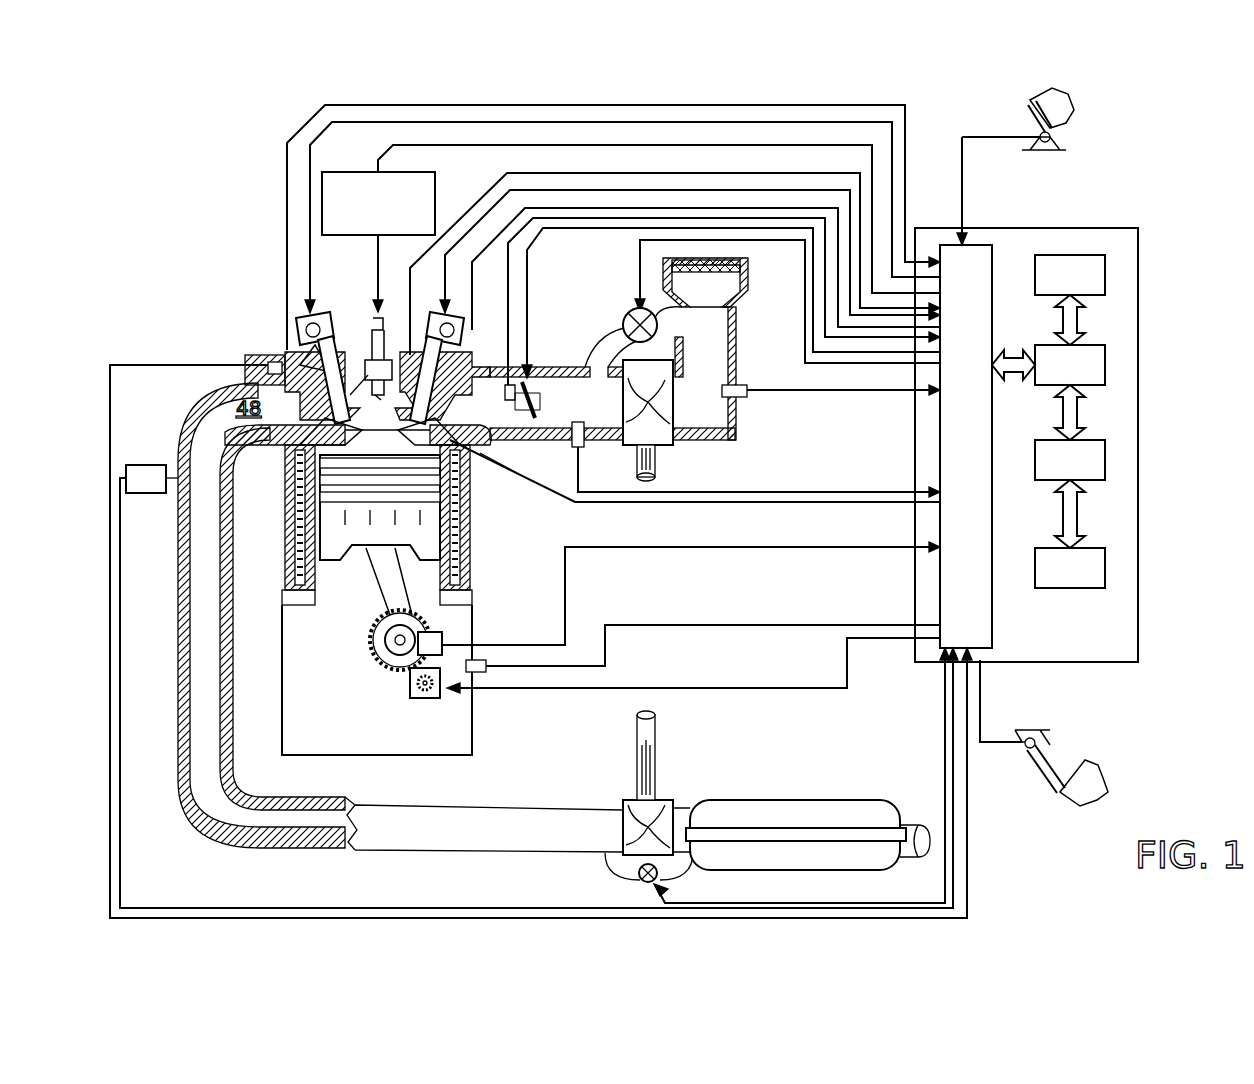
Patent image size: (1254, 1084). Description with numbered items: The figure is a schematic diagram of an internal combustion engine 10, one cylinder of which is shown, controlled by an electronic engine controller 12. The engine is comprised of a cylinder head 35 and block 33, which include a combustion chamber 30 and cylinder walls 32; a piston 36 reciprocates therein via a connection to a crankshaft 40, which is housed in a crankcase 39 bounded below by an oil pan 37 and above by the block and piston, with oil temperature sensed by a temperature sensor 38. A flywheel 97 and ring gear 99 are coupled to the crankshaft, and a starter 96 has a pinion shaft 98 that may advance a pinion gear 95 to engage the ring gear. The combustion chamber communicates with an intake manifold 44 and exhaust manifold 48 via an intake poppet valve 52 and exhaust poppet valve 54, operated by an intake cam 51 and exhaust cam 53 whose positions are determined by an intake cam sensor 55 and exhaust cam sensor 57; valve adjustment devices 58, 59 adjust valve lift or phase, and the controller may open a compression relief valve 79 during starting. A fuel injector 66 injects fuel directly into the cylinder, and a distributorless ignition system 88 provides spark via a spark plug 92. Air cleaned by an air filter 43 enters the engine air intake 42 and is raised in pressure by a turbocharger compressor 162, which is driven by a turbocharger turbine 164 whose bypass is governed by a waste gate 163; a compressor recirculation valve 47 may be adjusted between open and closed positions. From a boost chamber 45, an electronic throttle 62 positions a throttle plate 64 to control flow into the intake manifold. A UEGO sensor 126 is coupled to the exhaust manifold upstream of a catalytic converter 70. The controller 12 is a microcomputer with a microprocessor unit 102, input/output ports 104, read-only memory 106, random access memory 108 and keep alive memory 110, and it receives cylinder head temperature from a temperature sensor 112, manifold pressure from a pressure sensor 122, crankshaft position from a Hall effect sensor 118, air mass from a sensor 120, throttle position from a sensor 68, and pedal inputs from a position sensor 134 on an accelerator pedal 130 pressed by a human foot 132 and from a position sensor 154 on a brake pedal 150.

The internal combustion engine 10 is at (212, 298).
The electronic engine controller 12 is at (1132, 228).
The combustion chamber 30 is at (375, 450).
The cylinder walls 32 is at (318, 595).
The block 33 is at (278, 490).
The cylinder head 35 is at (272, 348).
The piston 36 is at (362, 545).
The oil pan 37 is at (472, 737).
The temperature sensor 38 is at (486, 667).
The crankcase 39 is at (292, 678).
The crankshaft 40 is at (385, 665).
The engine air intake 42 is at (580, 283).
The air filter 43 is at (722, 278).
The intake manifold 44 is at (490, 408).
The boost chamber 45 is at (613, 373).
The compressor recirculation valve 47 is at (628, 312).
The exhaust manifold 48 is at (400, 617).
The intake cam 51 is at (445, 300).
The intake poppet valve 52 is at (430, 408).
The exhaust cam 53 is at (315, 300).
The exhaust poppet valve 54 is at (325, 412).
The intake cam sensor 55 is at (455, 335).
The exhaust cam sensor 57 is at (300, 325).
The valve adjustment device 58 is at (330, 345).
The valve adjustment device 59 is at (455, 318).
The electronic throttle 62 is at (534, 398).
The throttle plate 64 is at (530, 412).
The fuel injector 66 is at (504, 475).
The throttle position sensor 68 is at (506, 382).
The catalytic converter 70 is at (735, 800).
The compression relief valve 79 is at (402, 375).
The distributorless ignition system 88 is at (350, 172).
The spark plug 92 is at (370, 345).
The pinion gear 95 is at (428, 700).
The starter 96 is at (440, 698).
The flywheel 97 is at (378, 642).
The pinion shaft 98 is at (420, 692).
The ring gear 99 is at (395, 675).
The microprocessor unit 102 is at (1105, 365).
The input/output ports 104 is at (992, 258).
The read-only memory 106 is at (1105, 272).
The random access memory 108 is at (1105, 465).
The keep alive memory 110 is at (1105, 565).
The temperature sensor 112 is at (266, 362).
The Hall effect sensor 118 is at (442, 632).
The air mass sensor 120 is at (745, 385).
The pressure sensor 122 is at (574, 447).
The Universal Exhaust Gas Oxygen sensor 126 is at (148, 465).
The accelerator pedal 130 is at (1030, 113).
The human foot 132 is at (1080, 103).
The position sensor 134 is at (1052, 140).
The brake pedal 150 is at (1052, 795).
The position sensor 154 is at (1022, 738).
The turbocharger compressor 162 is at (660, 432).
The waste gate 163 is at (640, 884).
The turbocharger turbine 164 is at (628, 800).